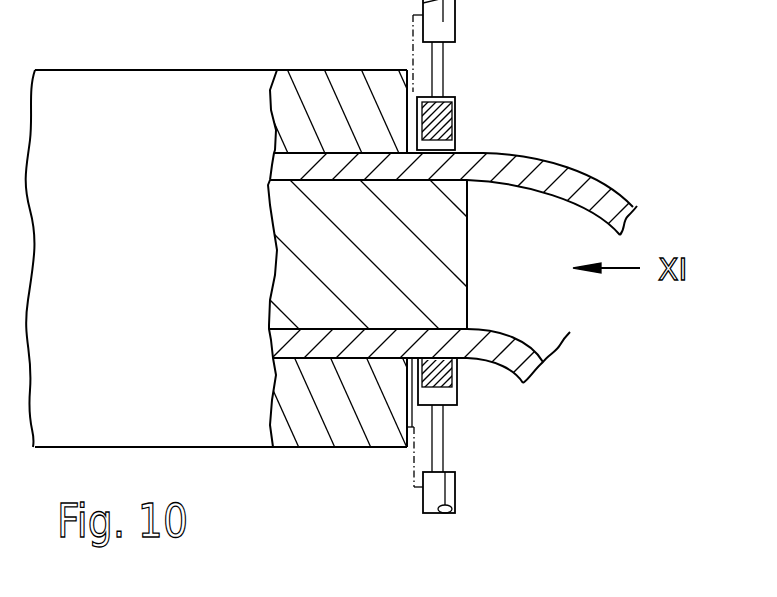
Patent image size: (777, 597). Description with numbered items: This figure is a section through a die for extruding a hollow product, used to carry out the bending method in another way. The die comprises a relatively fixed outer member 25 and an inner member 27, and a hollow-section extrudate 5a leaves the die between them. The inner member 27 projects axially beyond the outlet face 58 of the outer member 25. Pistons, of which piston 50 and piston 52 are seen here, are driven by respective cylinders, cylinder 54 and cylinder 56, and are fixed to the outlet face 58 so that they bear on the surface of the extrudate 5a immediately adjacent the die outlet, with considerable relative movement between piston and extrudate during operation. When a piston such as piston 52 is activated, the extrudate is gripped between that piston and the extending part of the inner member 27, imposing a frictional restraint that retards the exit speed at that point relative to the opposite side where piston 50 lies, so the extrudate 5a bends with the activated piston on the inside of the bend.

The outer member 25 is at (301, 83).
The inner member 27 is at (450, 248).
The extrudate 5a is at (600, 176).
The piston 50 is at (455, 118).
The piston 52 is at (455, 390).
The cylinder 54 is at (444, 25).
The cylinder 56 is at (448, 492).
The outlet face 58 is at (410, 418).